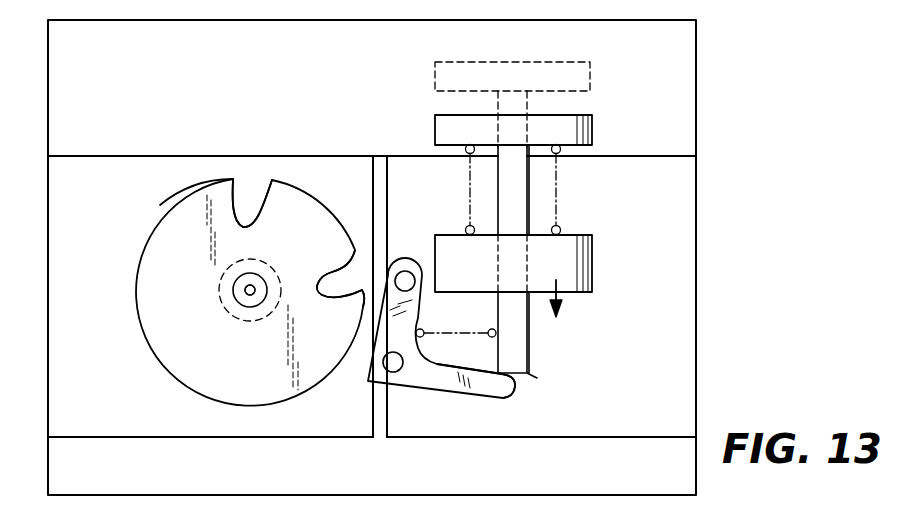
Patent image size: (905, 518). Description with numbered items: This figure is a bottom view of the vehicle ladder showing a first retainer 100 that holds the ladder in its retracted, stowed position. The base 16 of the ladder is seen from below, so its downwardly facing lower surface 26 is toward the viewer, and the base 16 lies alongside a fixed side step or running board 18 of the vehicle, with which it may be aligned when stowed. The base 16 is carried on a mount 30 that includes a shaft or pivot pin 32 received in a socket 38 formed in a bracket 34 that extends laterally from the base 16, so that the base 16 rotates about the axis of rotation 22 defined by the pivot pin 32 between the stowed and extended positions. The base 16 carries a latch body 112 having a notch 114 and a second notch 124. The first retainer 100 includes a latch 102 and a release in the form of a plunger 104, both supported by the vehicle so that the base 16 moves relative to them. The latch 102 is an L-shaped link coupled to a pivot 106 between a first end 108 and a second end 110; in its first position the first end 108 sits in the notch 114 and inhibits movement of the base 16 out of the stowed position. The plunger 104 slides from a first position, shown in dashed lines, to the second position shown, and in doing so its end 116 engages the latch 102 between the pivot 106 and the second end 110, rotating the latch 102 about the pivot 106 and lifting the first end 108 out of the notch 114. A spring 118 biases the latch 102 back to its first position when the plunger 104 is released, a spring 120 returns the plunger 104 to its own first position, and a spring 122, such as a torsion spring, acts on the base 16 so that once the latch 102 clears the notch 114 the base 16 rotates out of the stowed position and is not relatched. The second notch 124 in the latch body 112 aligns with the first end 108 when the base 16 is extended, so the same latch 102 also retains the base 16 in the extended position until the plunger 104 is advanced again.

The base 16 is at (88, 438).
The running board 18 is at (658, 156).
The axis of rotation 22 is at (257, 293).
The lower surface 26 is at (58, 407).
The mount 30 is at (244, 320).
The pivot pin 32 is at (254, 286).
The bracket 34 is at (190, 228).
The socket 38 is at (233, 290).
The first retainer 100 is at (430, 338).
The latch 102 is at (419, 378).
The plunger 104 is at (537, 62).
The pivot 106 is at (384, 367).
The first end 108 is at (403, 259).
The second end 110 is at (445, 403).
The latch body 112 is at (157, 340).
The notch 114 is at (352, 272).
The end of the plunger 116 is at (530, 374).
The spring 118 is at (446, 334).
The spring 120 is at (557, 191).
The spring 122 is at (220, 307).
The second notch 124 is at (262, 204).